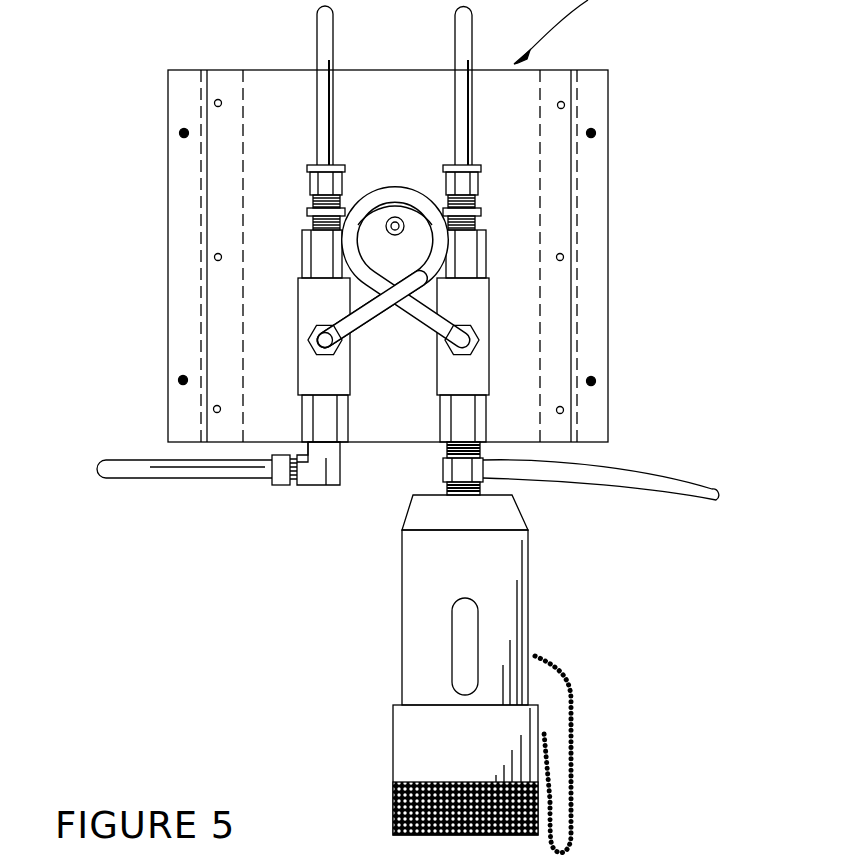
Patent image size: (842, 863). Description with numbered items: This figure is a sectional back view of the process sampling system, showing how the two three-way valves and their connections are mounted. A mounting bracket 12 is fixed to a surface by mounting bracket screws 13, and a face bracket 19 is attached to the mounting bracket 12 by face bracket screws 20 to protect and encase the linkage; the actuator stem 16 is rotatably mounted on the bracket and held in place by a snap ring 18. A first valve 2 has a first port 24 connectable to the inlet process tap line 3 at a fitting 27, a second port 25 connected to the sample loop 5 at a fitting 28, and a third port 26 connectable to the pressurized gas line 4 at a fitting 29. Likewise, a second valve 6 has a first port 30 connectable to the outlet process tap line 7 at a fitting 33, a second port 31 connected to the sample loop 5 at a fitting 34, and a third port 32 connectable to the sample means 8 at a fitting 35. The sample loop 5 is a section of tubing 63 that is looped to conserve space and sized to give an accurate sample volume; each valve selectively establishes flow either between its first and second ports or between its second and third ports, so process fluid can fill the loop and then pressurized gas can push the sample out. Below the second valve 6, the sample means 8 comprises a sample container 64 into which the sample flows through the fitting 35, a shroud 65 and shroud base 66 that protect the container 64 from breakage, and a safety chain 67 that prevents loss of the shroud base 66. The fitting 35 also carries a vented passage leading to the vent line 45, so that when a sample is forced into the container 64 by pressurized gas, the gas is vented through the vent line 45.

The first valve 2 is at (300, 323).
The inlet process tap line 3 is at (335, 34).
The pressurized gas line 4 is at (183, 473).
The sample loop 5 is at (388, 195).
The second valve 6 is at (488, 323).
The outlet process tap line 7 is at (472, 34).
The sample means 8 is at (478, 674).
The mounting bracket 12 is at (168, 178).
The mounting bracket screws 13 is at (184, 133).
The actuator stem 16 is at (397, 233).
The snap ring 18 is at (390, 230).
The face bracket 19 is at (248, 95).
The face bracket screws 20 is at (221, 106).
The first port 24 is at (304, 243).
The second port 25 is at (311, 345).
The third port 26 is at (303, 422).
The fitting 27 is at (312, 183).
The fitting 28 is at (342, 347).
The fitting 29 is at (338, 473).
The first port 30 is at (486, 243).
The second port 31 is at (478, 347).
The third port 32 is at (484, 425).
The fitting 33 is at (478, 183).
The fitting 34 is at (457, 350).
The fitting 35 is at (446, 452).
The vent line 45 is at (652, 478).
The tubing 63 is at (398, 200).
The sample container 64 is at (470, 623).
The shroud 65 is at (402, 645).
The shroud base 66 is at (398, 773).
The safety chain 67 is at (572, 730).